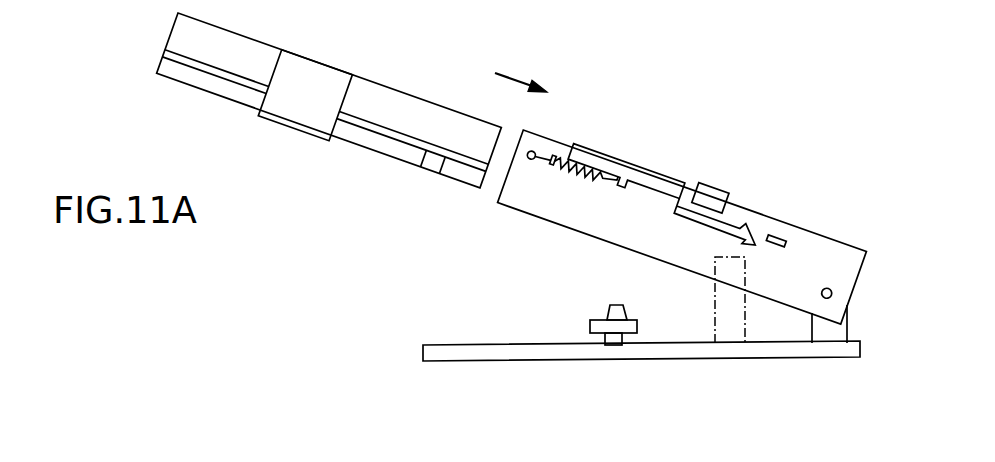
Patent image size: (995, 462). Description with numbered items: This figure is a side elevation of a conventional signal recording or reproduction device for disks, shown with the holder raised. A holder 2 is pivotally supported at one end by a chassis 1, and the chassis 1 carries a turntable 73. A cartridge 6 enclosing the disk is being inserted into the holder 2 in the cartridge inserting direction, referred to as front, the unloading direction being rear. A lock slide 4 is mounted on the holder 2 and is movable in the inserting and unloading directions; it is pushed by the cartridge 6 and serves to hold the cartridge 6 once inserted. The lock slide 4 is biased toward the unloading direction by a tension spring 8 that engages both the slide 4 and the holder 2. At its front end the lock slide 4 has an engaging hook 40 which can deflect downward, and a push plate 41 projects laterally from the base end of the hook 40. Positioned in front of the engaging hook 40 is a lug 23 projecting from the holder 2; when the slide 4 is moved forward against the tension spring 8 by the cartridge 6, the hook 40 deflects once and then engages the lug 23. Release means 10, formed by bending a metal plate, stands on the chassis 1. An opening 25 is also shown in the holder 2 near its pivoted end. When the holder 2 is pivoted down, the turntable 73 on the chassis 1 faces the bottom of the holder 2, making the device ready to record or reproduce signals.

The chassis 1 is at (482, 345).
The holder 2 is at (822, 252).
The lock slide 4 is at (668, 172).
The cartridge 6 is at (398, 98).
The tension spring 8 is at (556, 156).
The release means 10 is at (712, 312).
The lug 23 is at (782, 237).
The hole 25 is at (832, 292).
The engaging hook 40 is at (750, 207).
The push plate 41 is at (702, 212).
The turntable 73 is at (605, 310).